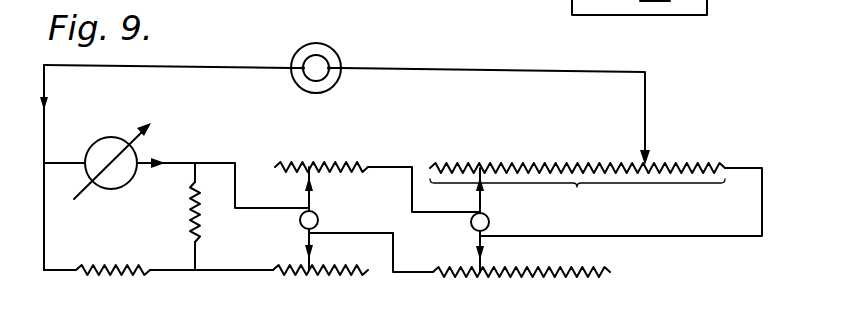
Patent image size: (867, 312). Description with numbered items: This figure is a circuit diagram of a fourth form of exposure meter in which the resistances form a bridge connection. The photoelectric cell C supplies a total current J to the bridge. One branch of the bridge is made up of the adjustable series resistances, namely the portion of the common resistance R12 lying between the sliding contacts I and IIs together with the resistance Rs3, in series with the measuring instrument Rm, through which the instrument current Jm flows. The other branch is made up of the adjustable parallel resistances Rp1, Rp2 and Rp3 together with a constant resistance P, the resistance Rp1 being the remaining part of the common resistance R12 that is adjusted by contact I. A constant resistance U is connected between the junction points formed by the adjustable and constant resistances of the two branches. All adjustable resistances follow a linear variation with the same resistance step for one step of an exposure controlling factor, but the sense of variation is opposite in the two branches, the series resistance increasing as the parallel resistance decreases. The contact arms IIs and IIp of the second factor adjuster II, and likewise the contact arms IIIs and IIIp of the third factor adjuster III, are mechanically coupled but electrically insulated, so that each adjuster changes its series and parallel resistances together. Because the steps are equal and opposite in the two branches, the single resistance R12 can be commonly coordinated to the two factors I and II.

The total current J is at (47, 100).
The measuring instrument Rm is at (89, 158).
The measuring instrument current Jm is at (154, 154).
The constant resistance U is at (191, 221).
The constant resistance P is at (120, 275).
The photoelectric cell C is at (338, 62).
The adjustable series resistance Rs3 is at (321, 157).
The series contact arm IIIs is at (294, 189).
The third exposure factor adjuster III is at (319, 221).
The parallel contact arm IIIp is at (295, 249).
The adjustable parallel resistance Rp3 is at (306, 275).
The series contact arm IIs is at (477, 193).
The second exposure factor adjuster II is at (490, 222).
The parallel contact arm IIp is at (477, 254).
The adjustable parallel resistance Rp2 is at (521, 286).
The adjustable parallel resistance Rp1 is at (725, 161).
The sliding contact I is at (646, 155).
The common resistance R12 is at (577, 196).